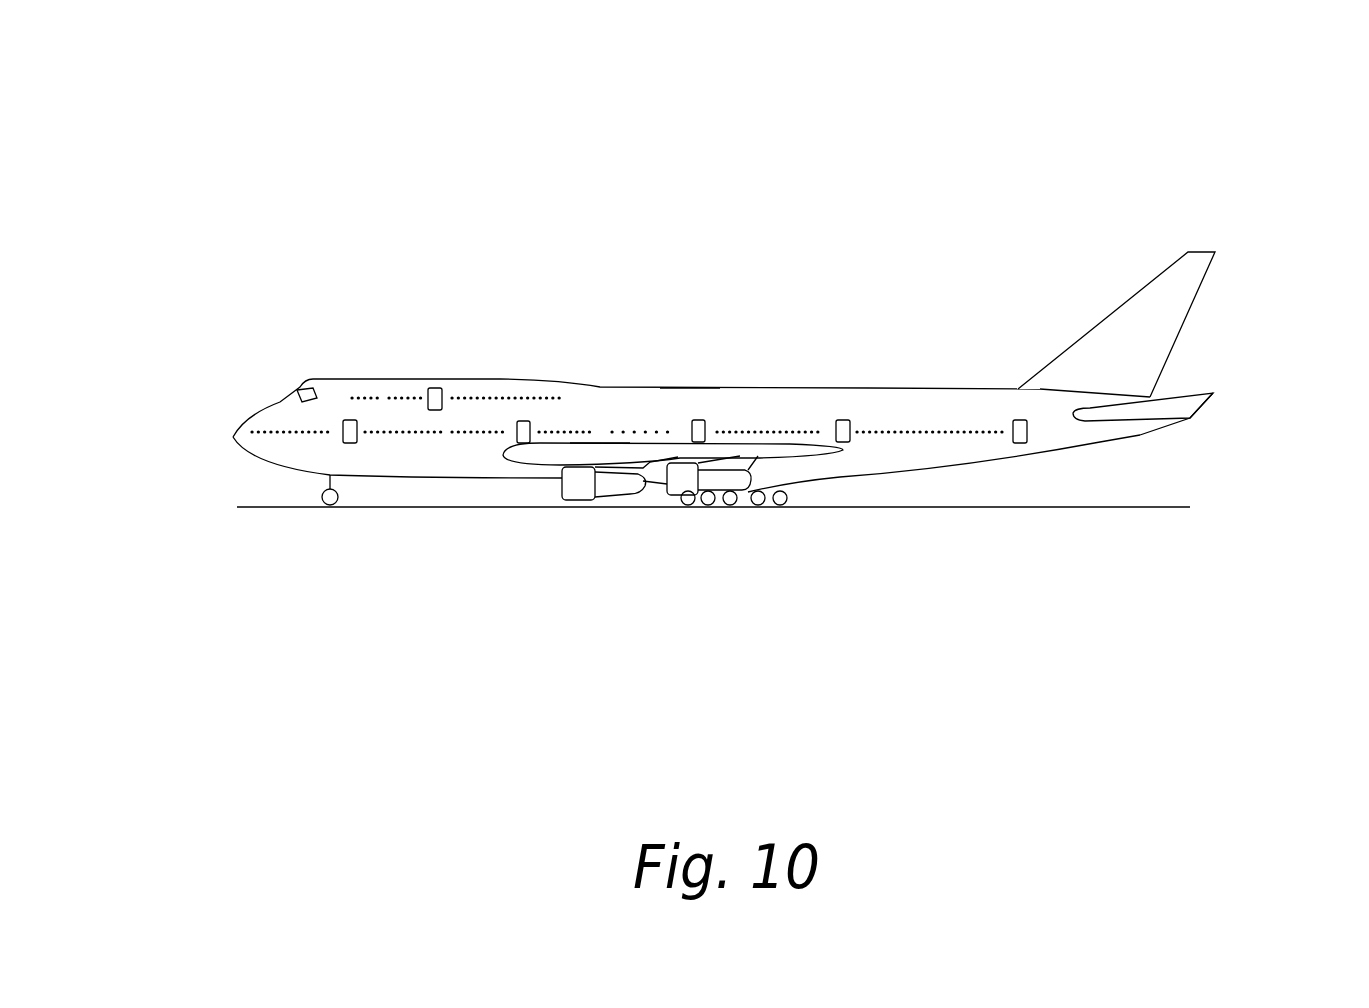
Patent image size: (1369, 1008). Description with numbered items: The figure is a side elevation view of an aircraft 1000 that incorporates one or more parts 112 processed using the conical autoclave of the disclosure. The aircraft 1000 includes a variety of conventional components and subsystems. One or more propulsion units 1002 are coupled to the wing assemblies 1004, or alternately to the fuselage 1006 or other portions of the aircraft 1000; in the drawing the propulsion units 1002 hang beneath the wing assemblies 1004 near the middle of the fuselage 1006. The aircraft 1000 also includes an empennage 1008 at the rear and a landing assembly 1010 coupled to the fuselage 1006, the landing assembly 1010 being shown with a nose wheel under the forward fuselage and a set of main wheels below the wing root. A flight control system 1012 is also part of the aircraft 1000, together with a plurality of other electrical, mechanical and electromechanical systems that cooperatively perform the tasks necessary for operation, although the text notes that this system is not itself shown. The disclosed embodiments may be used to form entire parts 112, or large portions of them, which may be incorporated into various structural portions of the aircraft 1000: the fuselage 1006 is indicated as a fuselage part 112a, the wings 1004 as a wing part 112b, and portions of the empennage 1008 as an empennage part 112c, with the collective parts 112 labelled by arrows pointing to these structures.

The aircraft 1000 is at (212, 128).
The parts 112 is at (1035, 268).
The fuselage part 112a is at (690, 375).
The wing part 112b is at (595, 438).
The empennage part 112c is at (1214, 304).
The propulsion units 1002 is at (563, 500).
The wing assemblies 1004 is at (556, 450).
The fuselage 1006 is at (733, 387).
The empennage 1008 is at (1223, 342).
The landing assembly 1010 is at (318, 500).
The flight control system 1012 is at (278, 403).